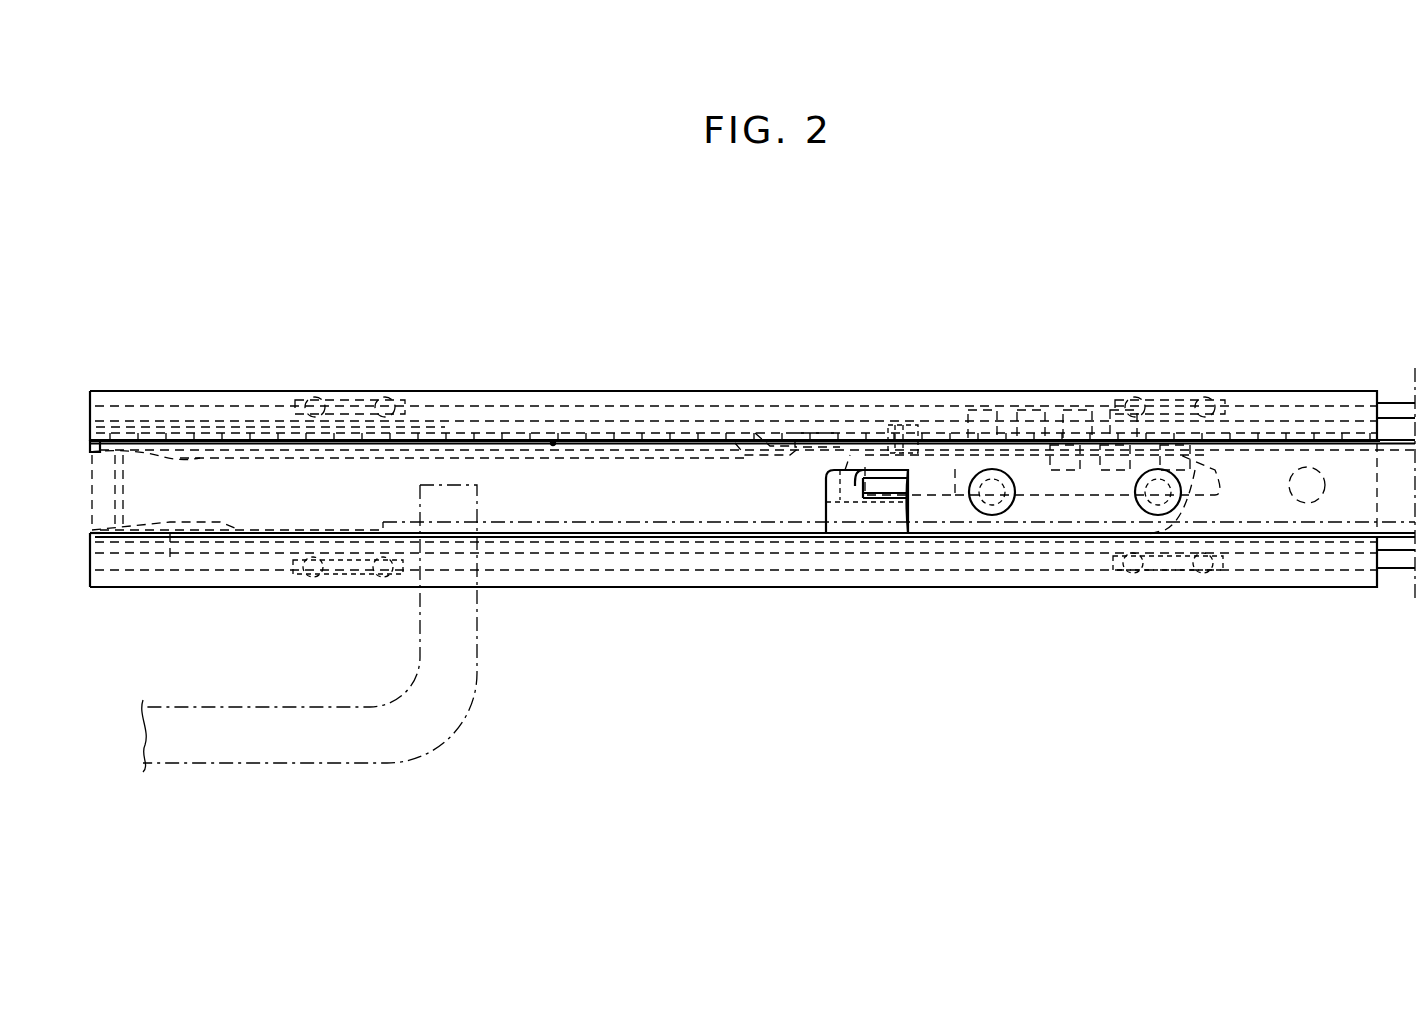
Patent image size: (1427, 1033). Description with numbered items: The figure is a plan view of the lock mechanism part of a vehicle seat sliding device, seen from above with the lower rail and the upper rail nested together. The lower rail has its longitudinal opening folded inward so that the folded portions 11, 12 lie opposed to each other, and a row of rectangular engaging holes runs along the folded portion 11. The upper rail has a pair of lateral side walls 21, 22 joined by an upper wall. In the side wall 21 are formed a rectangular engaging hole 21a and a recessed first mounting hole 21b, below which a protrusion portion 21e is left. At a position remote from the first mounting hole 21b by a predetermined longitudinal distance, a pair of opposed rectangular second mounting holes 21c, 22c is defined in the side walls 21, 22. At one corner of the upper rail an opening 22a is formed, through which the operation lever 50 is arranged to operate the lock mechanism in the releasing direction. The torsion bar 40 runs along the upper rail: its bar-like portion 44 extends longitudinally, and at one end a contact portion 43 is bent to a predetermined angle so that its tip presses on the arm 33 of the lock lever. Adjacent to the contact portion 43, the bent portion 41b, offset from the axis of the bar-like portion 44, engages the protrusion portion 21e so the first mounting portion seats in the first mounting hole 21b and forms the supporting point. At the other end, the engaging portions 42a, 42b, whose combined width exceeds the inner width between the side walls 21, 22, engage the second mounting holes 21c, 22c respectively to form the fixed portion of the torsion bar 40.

The folded portion 11 is at (92, 452).
The folded portion 12 is at (95, 532).
The side wall 21 is at (1395, 440).
The engaging hole 21a is at (1032, 410).
The first mounting hole 21b is at (802, 433).
The second mounting hole 21c is at (168, 448).
The protrusion portion 21e is at (768, 433).
The side wall 22 is at (1393, 530).
The opening 22a is at (902, 520).
The second mounting hole 22c is at (175, 540).
The arm 33 is at (887, 497).
The torsion bar 40 is at (553, 443).
The bent portion 41b is at (740, 435).
The engaging portion 42a is at (128, 438).
The engaging portion 42b is at (125, 537).
The contact portion 43 is at (872, 497).
The bar-like portion 44 is at (443, 443).
The operation lever 50 is at (462, 698).